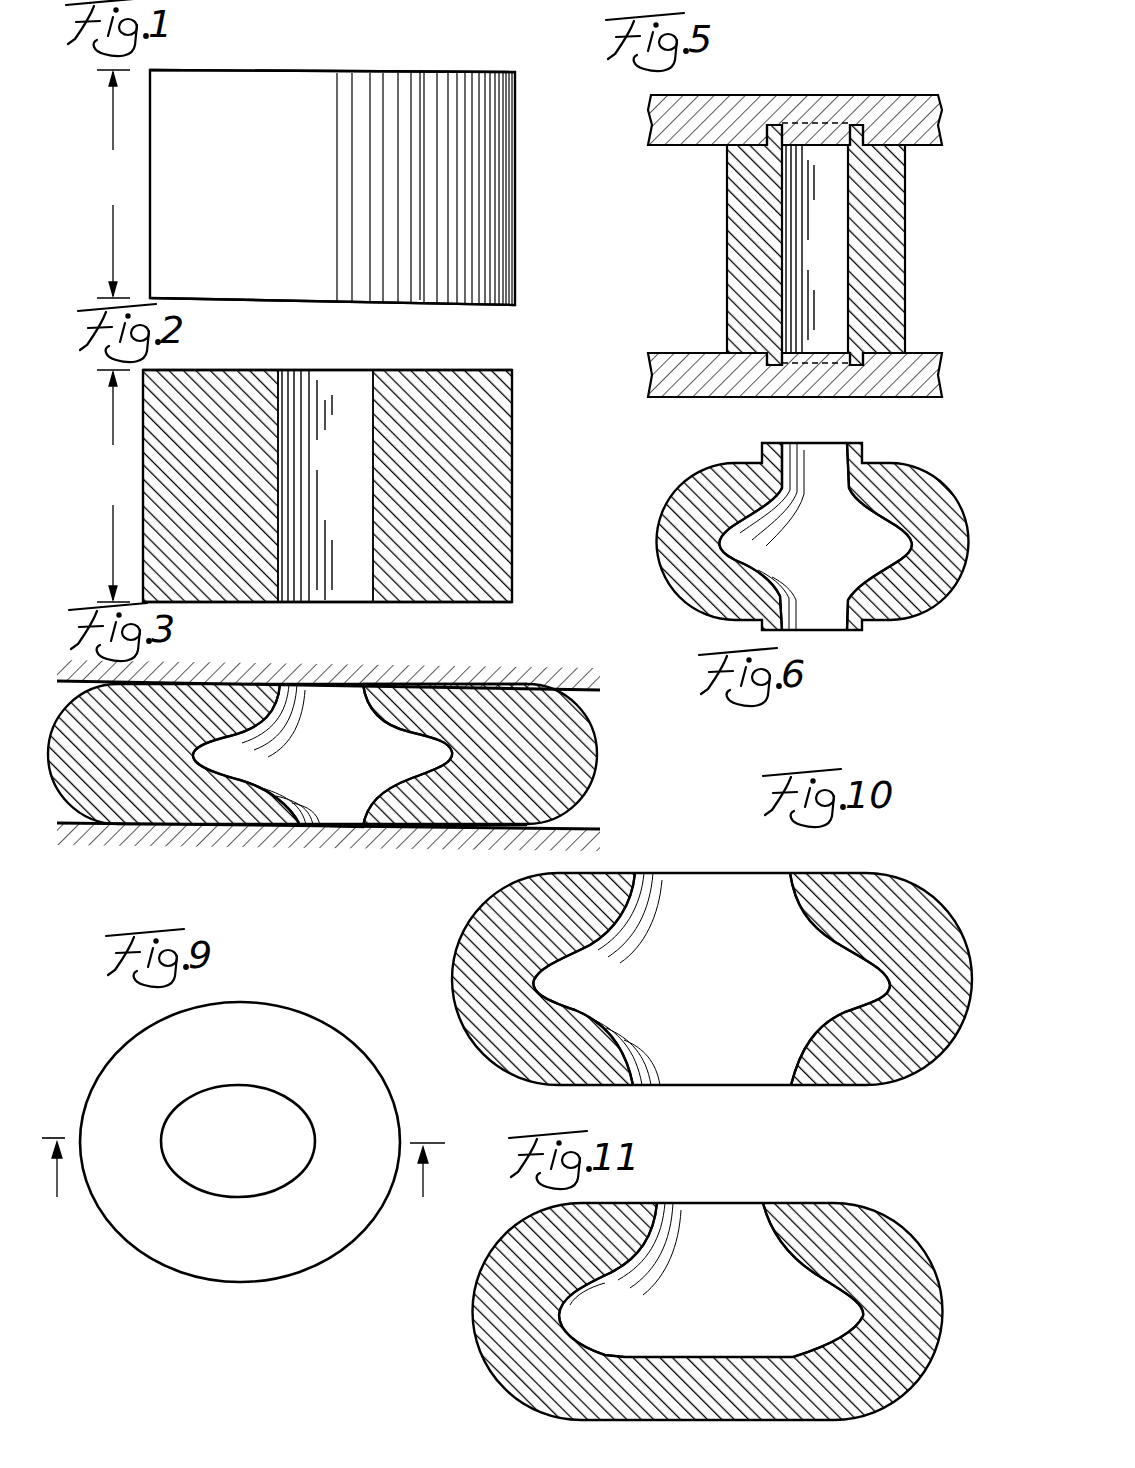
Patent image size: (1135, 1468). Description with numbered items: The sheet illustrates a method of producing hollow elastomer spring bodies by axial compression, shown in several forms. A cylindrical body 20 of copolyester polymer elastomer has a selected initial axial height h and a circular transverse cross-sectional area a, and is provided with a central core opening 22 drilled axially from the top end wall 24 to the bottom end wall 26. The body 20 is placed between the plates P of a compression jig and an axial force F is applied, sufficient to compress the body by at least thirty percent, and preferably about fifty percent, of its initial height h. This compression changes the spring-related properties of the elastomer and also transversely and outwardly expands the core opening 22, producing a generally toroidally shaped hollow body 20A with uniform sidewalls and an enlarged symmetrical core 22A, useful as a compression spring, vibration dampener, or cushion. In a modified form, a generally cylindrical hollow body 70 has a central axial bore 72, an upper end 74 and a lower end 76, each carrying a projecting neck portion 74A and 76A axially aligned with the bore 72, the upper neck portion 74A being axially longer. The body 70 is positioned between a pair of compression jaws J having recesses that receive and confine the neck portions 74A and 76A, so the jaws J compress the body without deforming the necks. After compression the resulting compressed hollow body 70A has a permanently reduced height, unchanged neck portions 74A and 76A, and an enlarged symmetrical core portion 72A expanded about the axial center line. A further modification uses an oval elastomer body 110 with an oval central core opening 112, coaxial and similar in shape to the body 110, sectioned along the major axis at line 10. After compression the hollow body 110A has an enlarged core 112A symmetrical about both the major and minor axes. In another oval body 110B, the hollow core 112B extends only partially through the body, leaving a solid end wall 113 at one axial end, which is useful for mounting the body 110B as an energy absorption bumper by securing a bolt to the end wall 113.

In FIG. 1, the cylindrical body 20 is at (332, 187).
In FIG. 2, the cylindrical body 20 is at (487, 441).
In FIG. 2, the central core opening 22 is at (372, 476).
In FIG. 1, the top end wall 24 is at (265, 68).
In FIG. 2, the top end wall 24 is at (270, 350).
In FIG. 3, the top end wall 24 is at (497, 696).
In FIG. 1, the bottom end wall 26 is at (430, 301).
In FIG. 2, the bottom end wall 26 is at (417, 603).
In FIG. 3, the bottom end wall 26 is at (470, 820).
In FIG. 1, the circular transverse cross-sectional area a is at (421, 66).
In FIG. 1, the initial axial height h is at (113, 184).
In FIG. 2, the initial axial height h is at (113, 486).
In FIG. 3, the hollow body 20A is at (580, 746).
In FIG. 3, the enlarged symmetrical core 22A is at (394, 730).
In FIG. 3, the plates P is at (208, 663).
In FIG. 3, the axial force F is at (323, 680).
In FIG. 5, the hollow body 70 is at (727, 221).
In FIG. 5, the central axial bore 72 is at (851, 244).
In FIG. 5, the upper end 74 is at (890, 130).
In FIG. 5, the neck portion 74A is at (772, 123).
In FIG. 6, the neck portion 74A is at (868, 457).
In FIG. 5, the lower end 76 is at (904, 363).
In FIG. 5, the neck portion 76A is at (768, 366).
In FIG. 6, the neck portion 76A is at (865, 633).
In FIG. 5, the compression jaws J is at (650, 113).
In FIG. 6, the compressed hollow body 70A is at (657, 543).
In FIG. 6, the enlarged symmetrical core portion 72A is at (878, 516).
In FIG. 9, the oval elastomer body 110 is at (183, 1274).
In FIG. 9, the oval central core opening 112 is at (283, 1184).
In FIG. 9, the line 10— 10 is at (241, 1189).
In FIG. 10, the compressed hollow body 110A is at (928, 904).
In FIG. 10, the enlarged core 112A is at (833, 930).
In FIG. 11, the oval body 110B is at (902, 1192).
In FIG. 11, the hollow core 112B is at (780, 1254).
In FIG. 11, the solid end wall 113 is at (705, 1356).